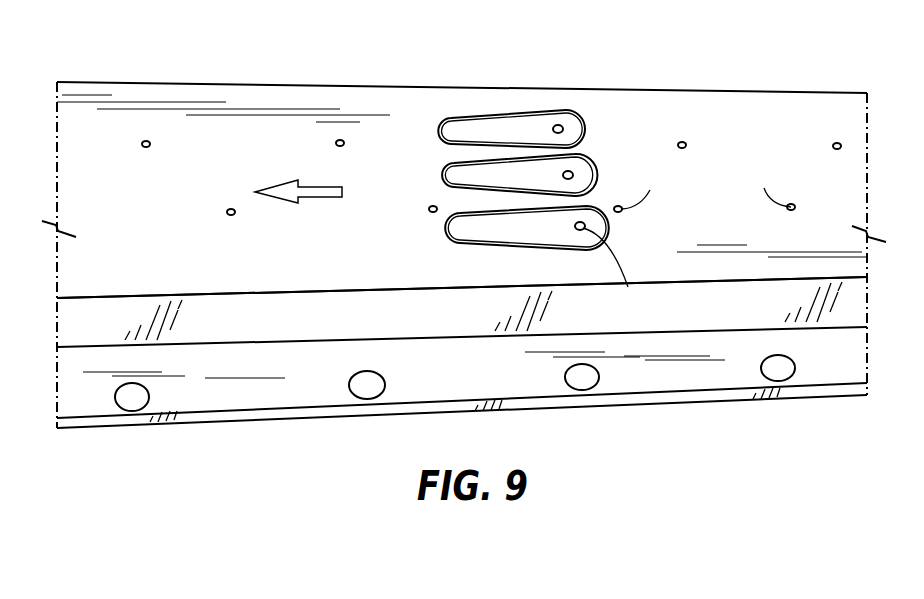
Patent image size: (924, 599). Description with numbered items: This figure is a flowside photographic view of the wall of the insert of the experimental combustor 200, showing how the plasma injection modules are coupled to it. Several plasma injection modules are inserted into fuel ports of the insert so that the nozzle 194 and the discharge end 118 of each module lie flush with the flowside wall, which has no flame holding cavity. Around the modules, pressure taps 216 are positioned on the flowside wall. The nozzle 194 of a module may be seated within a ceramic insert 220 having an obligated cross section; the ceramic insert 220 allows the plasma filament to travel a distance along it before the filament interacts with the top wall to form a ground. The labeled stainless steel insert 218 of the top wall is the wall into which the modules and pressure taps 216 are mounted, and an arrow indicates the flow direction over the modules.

The discharge end 118 is at (527, 105).
The nozzle 194 is at (560, 125).
The experimental combustor 200 is at (851, 163).
The pressure taps 216 is at (231, 210).
The stainless steel insert (top wall) 218 is at (267, 132).
The ceramic insert 220 is at (440, 128).